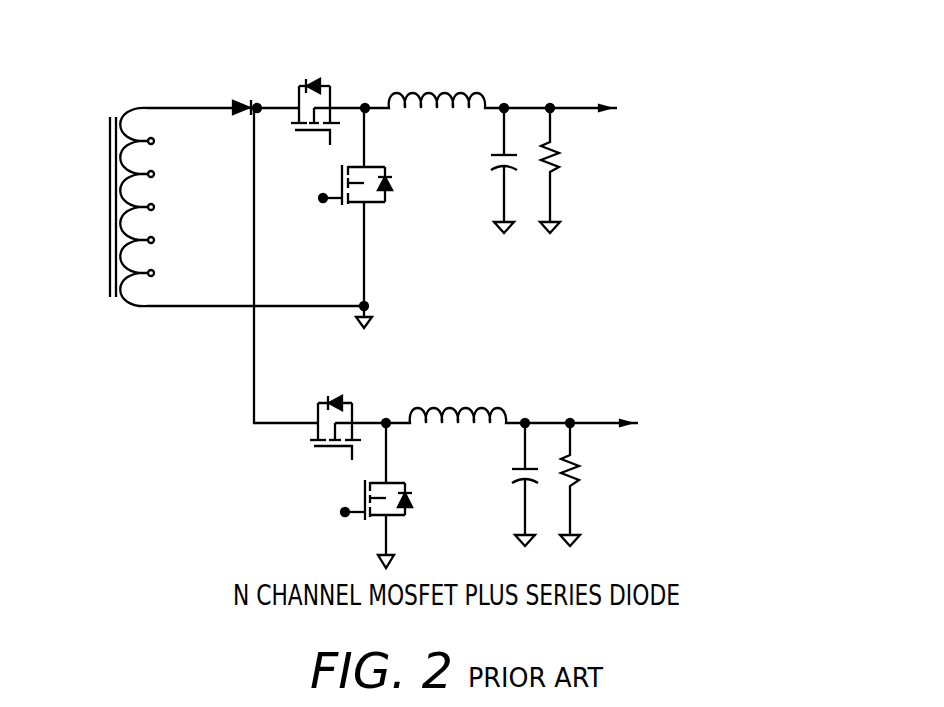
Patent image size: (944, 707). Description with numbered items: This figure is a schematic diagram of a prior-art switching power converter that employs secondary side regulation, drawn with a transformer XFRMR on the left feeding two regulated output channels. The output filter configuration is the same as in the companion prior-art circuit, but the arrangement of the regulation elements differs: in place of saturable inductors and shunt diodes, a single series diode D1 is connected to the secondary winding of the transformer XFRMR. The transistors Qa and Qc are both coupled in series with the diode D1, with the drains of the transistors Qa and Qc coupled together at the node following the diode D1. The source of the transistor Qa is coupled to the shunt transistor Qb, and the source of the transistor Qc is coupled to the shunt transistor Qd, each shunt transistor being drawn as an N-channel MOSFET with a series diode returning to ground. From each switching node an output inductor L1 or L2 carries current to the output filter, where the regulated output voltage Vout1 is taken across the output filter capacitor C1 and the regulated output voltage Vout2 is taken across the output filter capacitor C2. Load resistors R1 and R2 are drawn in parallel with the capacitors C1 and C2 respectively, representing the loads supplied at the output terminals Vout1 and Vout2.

The transformer XFRMR is at (195, 207).
The series diode D1 is at (238, 113).
The transistor Qa is at (330, 82).
The shunt transistor Qb is at (341, 206).
The transistor Qc is at (312, 431).
The shunt transistor Qd is at (358, 525).
The output inductor, first output L1 is at (434, 83).
The output inductor, second output L2 is at (455, 398).
The output filter capacitor C1 is at (485, 168).
The output filter capacitor C2 is at (505, 482).
The load resistor, first output R1 is at (565, 168).
The load resistor, second output R2 is at (586, 482).
The regulated output voltage Vout1 is at (594, 106).
The regulated output voltage Vout2 is at (618, 423).